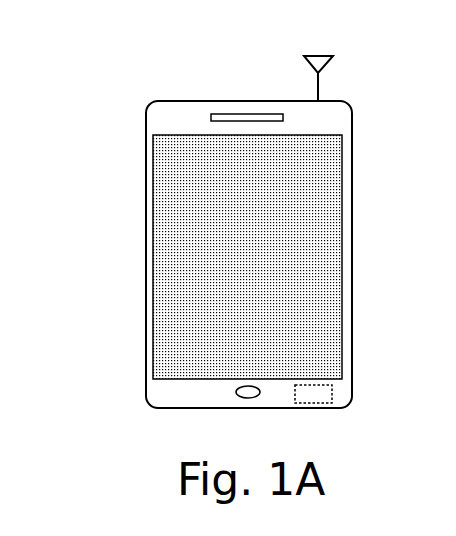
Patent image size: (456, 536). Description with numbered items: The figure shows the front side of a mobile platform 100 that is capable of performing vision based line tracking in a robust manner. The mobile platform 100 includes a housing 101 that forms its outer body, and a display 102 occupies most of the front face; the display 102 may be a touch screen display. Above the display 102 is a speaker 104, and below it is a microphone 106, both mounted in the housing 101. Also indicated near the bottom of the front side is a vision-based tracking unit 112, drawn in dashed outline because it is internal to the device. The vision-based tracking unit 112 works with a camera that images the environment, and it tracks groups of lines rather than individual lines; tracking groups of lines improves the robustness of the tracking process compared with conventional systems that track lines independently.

The mobile platform 100 is at (245, 249).
The housing 101 is at (146, 282).
The display 102 is at (343, 264).
The speaker 104 is at (211, 117).
The microphone 106 is at (238, 390).
The vision-based tracking unit 112 is at (332, 393).